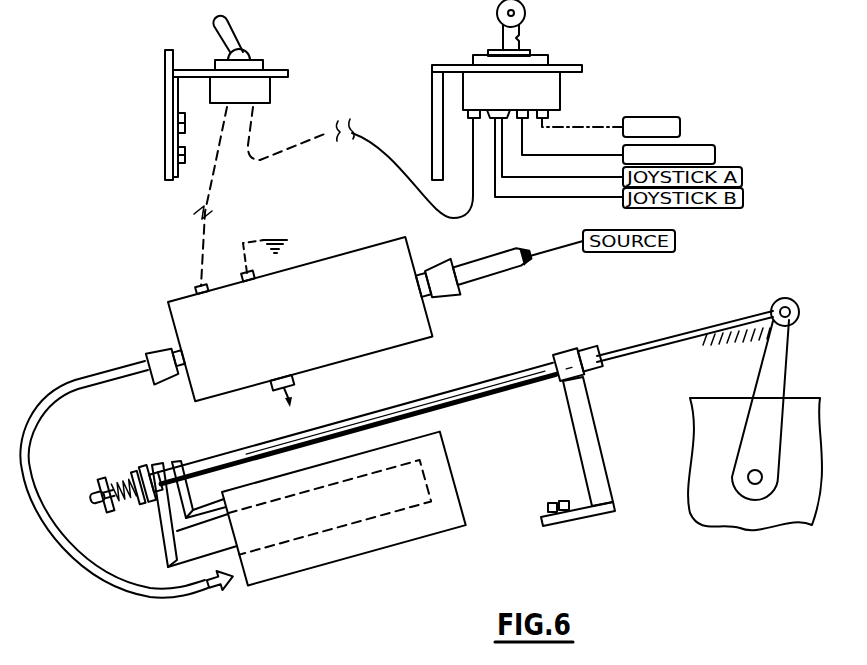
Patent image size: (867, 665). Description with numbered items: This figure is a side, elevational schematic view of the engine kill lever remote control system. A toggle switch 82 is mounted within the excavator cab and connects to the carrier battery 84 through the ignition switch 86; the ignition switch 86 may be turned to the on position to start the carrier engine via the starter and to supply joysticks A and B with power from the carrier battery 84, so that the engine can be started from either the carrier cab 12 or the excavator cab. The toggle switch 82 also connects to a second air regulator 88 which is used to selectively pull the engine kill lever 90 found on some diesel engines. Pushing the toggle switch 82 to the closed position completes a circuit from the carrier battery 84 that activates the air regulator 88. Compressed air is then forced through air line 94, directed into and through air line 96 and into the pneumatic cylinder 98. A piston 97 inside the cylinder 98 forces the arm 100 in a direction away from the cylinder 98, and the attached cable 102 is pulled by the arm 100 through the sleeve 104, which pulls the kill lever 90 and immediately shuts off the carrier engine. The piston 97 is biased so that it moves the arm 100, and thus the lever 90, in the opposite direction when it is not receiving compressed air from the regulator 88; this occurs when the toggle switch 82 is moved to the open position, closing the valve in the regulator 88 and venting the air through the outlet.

The toggle switch 82 is at (233, 26).
The ignition switch 86 is at (488, 38).
The carrier battery 84 is at (692, 121).
The carrier cab 12 is at (730, 151).
The second air regulator 88 is at (313, 258).
The air line 94 is at (480, 277).
The air line 96 is at (58, 550).
The sleeve 104 is at (437, 390).
The arm 100 is at (161, 514).
The pneumatic cylinder 98 is at (343, 560).
The piston 97 is at (413, 510).
The cable 102 is at (619, 359).
The engine kill lever 90 is at (790, 324).